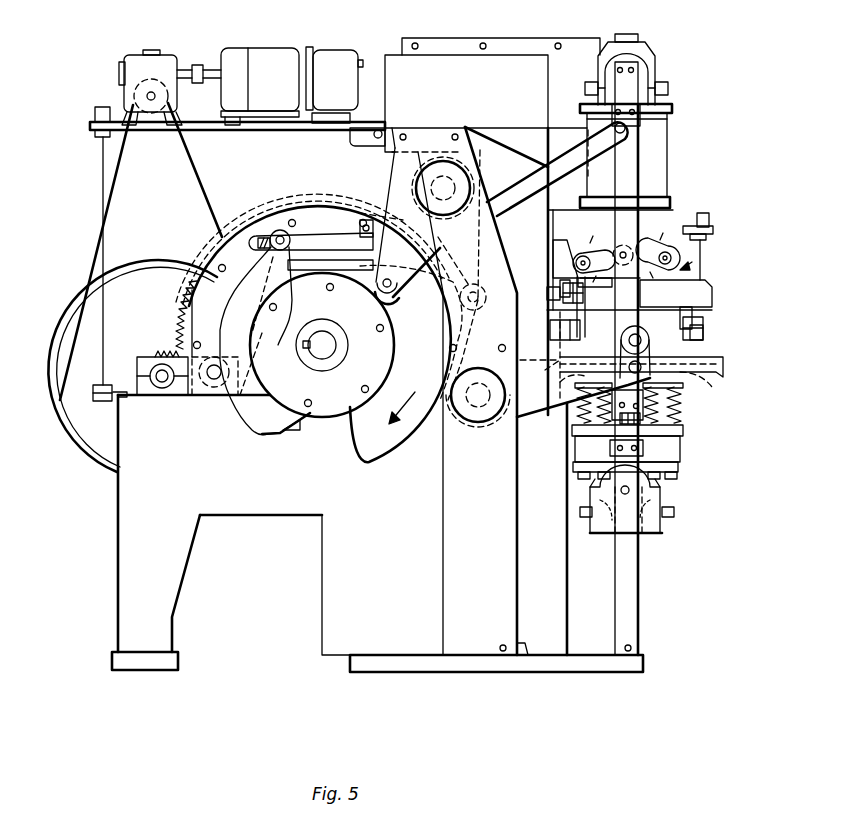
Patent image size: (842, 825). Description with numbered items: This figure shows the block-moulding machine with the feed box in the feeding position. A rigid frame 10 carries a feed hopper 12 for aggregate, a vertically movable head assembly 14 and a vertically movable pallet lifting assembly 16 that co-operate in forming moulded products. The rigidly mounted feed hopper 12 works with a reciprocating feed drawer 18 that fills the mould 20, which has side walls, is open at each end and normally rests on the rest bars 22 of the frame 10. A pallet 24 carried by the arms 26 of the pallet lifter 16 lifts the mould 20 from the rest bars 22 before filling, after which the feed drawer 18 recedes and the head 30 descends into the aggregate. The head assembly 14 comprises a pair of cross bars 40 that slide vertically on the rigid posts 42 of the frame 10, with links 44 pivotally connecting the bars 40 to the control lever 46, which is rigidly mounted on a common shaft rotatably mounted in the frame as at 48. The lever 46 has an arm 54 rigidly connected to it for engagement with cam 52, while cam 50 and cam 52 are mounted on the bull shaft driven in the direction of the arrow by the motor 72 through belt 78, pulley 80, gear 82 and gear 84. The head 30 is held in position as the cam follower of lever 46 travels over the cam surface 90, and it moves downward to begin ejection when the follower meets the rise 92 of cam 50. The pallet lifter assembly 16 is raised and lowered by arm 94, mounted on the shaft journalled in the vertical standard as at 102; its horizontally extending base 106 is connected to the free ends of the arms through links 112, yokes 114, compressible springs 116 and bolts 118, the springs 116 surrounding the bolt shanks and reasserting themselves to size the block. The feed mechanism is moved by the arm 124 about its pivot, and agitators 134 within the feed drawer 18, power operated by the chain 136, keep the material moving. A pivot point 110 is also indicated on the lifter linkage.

The rigid frame 10 is at (318, 632).
The feed hopper 12 is at (390, 57).
The head assembly 14 is at (692, 108).
The pallet lifting assembly 16 is at (712, 428).
The feed drawer 18 is at (675, 218).
The mould 20 is at (672, 318).
The rest bars 22 is at (722, 366).
The pallet 24 is at (714, 385).
The arms 26 is at (666, 488).
The head 30 is at (666, 152).
The cross bars 40 is at (660, 76).
The rigid posts 42 is at (640, 578).
The links 44 is at (642, 118).
The control lever 46 is at (520, 178).
The shaft mounting 48 is at (422, 183).
The cam 50 is at (280, 447).
The cam 52 is at (404, 458).
The arm 54 is at (482, 252).
The motor 72 is at (258, 50).
The belt 78 is at (212, 202).
The pulley 80 is at (148, 268).
The gear 82 is at (160, 355).
The gear 84 is at (180, 290).
The cam surface 90 is at (234, 312).
The rise 92 is at (262, 433).
The arm 94 is at (548, 414).
The shaft journal 102 is at (478, 424).
The base 106 is at (666, 530).
The pivot 110 is at (543, 360).
The links 112 is at (672, 344).
The yokes 114 is at (684, 468).
The compressible springs 116 is at (680, 403).
The bolts 118 is at (560, 382).
The arm 124 is at (276, 258).
The agitators 134 is at (692, 262).
The chain 136 is at (682, 255).